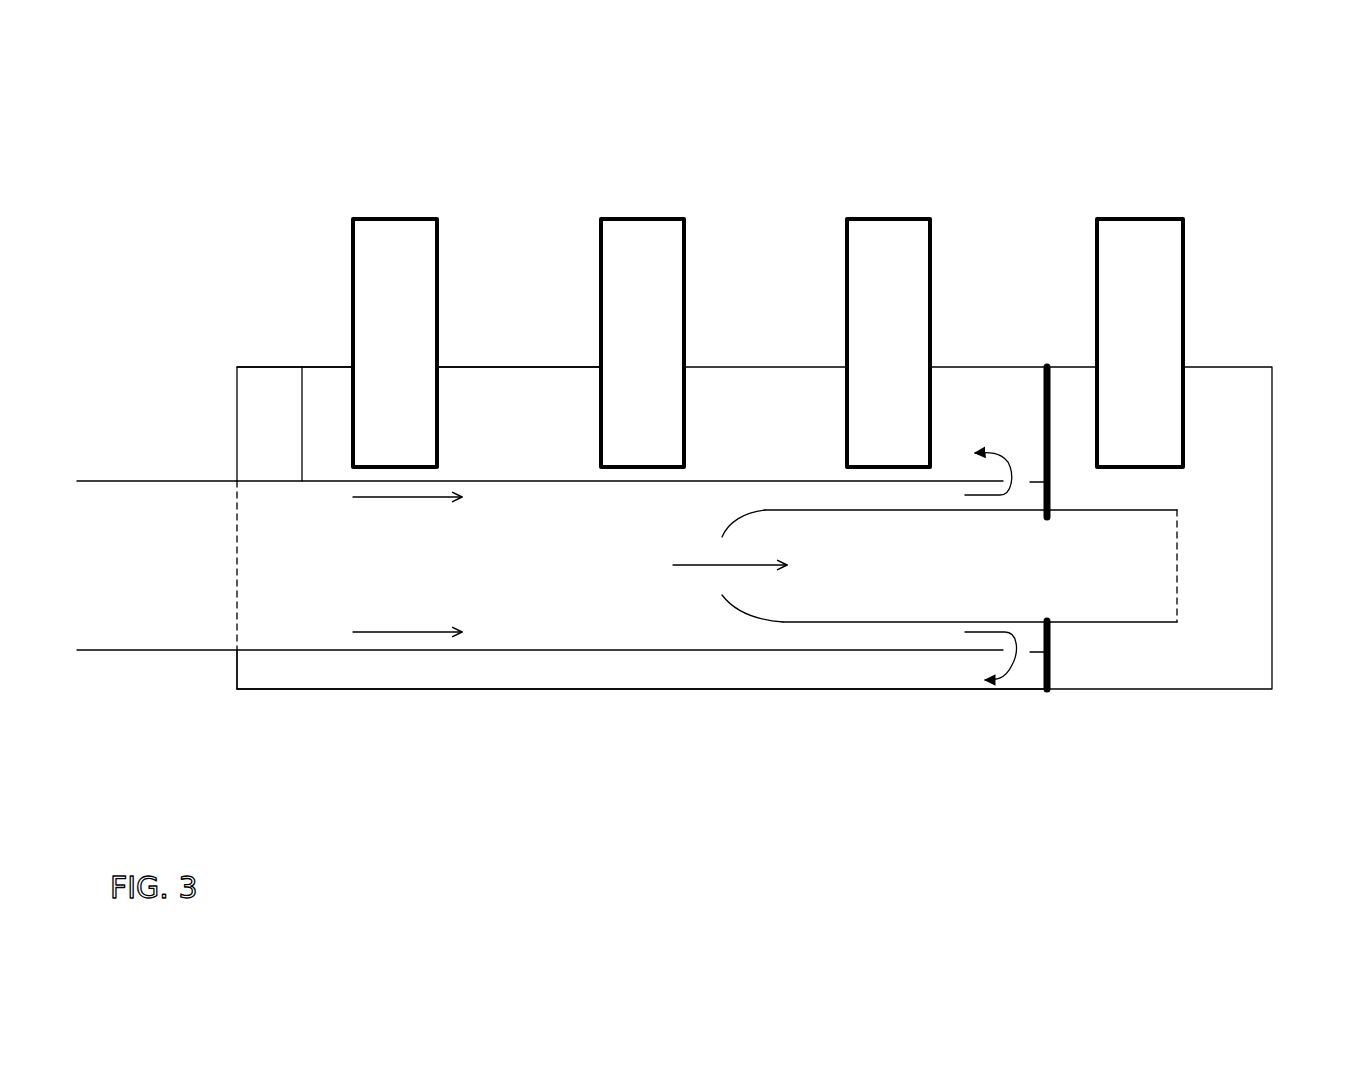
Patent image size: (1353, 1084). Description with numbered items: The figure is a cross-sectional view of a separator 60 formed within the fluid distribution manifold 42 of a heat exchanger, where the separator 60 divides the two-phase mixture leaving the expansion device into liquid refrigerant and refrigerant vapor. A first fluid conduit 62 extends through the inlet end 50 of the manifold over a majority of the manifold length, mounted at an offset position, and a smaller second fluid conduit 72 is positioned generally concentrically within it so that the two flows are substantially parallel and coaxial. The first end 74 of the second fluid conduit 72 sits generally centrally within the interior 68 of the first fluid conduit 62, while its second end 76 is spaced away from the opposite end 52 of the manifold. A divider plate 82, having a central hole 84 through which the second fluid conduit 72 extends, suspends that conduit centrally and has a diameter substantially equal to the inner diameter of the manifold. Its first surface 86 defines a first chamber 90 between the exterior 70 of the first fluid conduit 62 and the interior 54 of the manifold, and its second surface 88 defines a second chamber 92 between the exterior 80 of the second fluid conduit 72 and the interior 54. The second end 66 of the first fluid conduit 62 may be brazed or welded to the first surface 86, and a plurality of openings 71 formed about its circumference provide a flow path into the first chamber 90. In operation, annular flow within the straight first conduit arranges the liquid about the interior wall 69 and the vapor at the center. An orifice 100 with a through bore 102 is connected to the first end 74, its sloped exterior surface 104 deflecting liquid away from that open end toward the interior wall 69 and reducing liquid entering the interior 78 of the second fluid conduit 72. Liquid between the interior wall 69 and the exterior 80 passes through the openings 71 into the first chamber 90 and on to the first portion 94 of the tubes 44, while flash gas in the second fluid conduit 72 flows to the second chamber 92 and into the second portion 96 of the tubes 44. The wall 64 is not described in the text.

The fluid distribution manifold 42 is at (185, 318).
The tubes 44 is at (625, 268).
The inlet end 50 is at (237, 660).
The opposite end 52 is at (1273, 398).
The interior 54 is at (252, 388).
The separator 60 is at (448, 703).
The first fluid conduit 62 is at (558, 650).
The upper duct wall 64 is at (237, 513).
The second end 66 is at (1037, 653).
The interior 68 is at (407, 564).
The interior wall 69 is at (268, 648).
The exterior 70 is at (302, 480).
The openings 71 is at (1025, 490).
The second fluid conduit 72 is at (1117, 622).
The first end 74 is at (783, 622).
The second end 76 is at (1177, 570).
The interior 78 is at (925, 566).
The exterior 80 is at (1150, 508).
The divider plate 82 is at (1047, 366).
The central hole 84 is at (1053, 622).
The first surface 86 is at (1043, 388).
The second surface 88 is at (1052, 662).
The first chamber 90 is at (518, 400).
The second chamber 92 is at (1213, 653).
The first portion of tubes 94 is at (335, 188).
The second portion of tubes 96 is at (1073, 182).
The orifice 100 is at (735, 635).
The through bore 102 is at (733, 553).
The exterior surface 104 is at (765, 508).